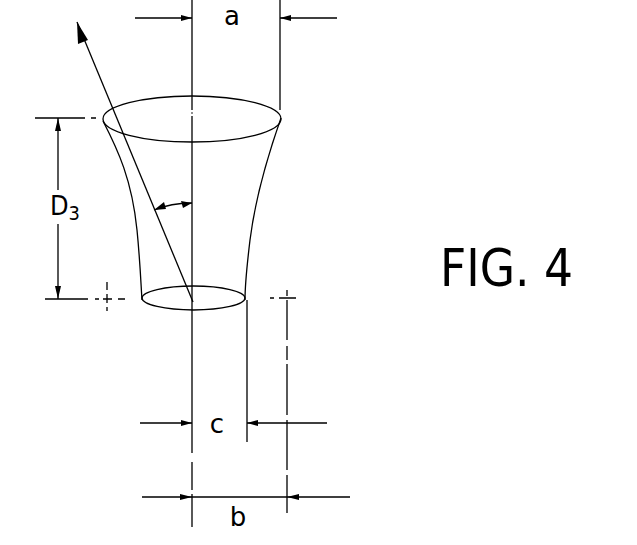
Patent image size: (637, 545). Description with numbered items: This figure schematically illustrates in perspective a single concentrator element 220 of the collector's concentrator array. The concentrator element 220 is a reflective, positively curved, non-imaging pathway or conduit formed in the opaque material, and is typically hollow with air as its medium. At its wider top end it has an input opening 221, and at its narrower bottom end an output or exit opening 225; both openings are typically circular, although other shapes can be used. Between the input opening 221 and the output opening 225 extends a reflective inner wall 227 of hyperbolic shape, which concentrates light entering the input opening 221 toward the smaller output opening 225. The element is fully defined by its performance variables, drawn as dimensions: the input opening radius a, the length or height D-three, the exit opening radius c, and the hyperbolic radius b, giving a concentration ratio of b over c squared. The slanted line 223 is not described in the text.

The concentrator element 220 is at (243, 215).
The input opening 221 is at (255, 100).
The axis of rotation 223 is at (258, 160).
The output opening 225 is at (227, 310).
The reflective inner wall 227 is at (142, 267).